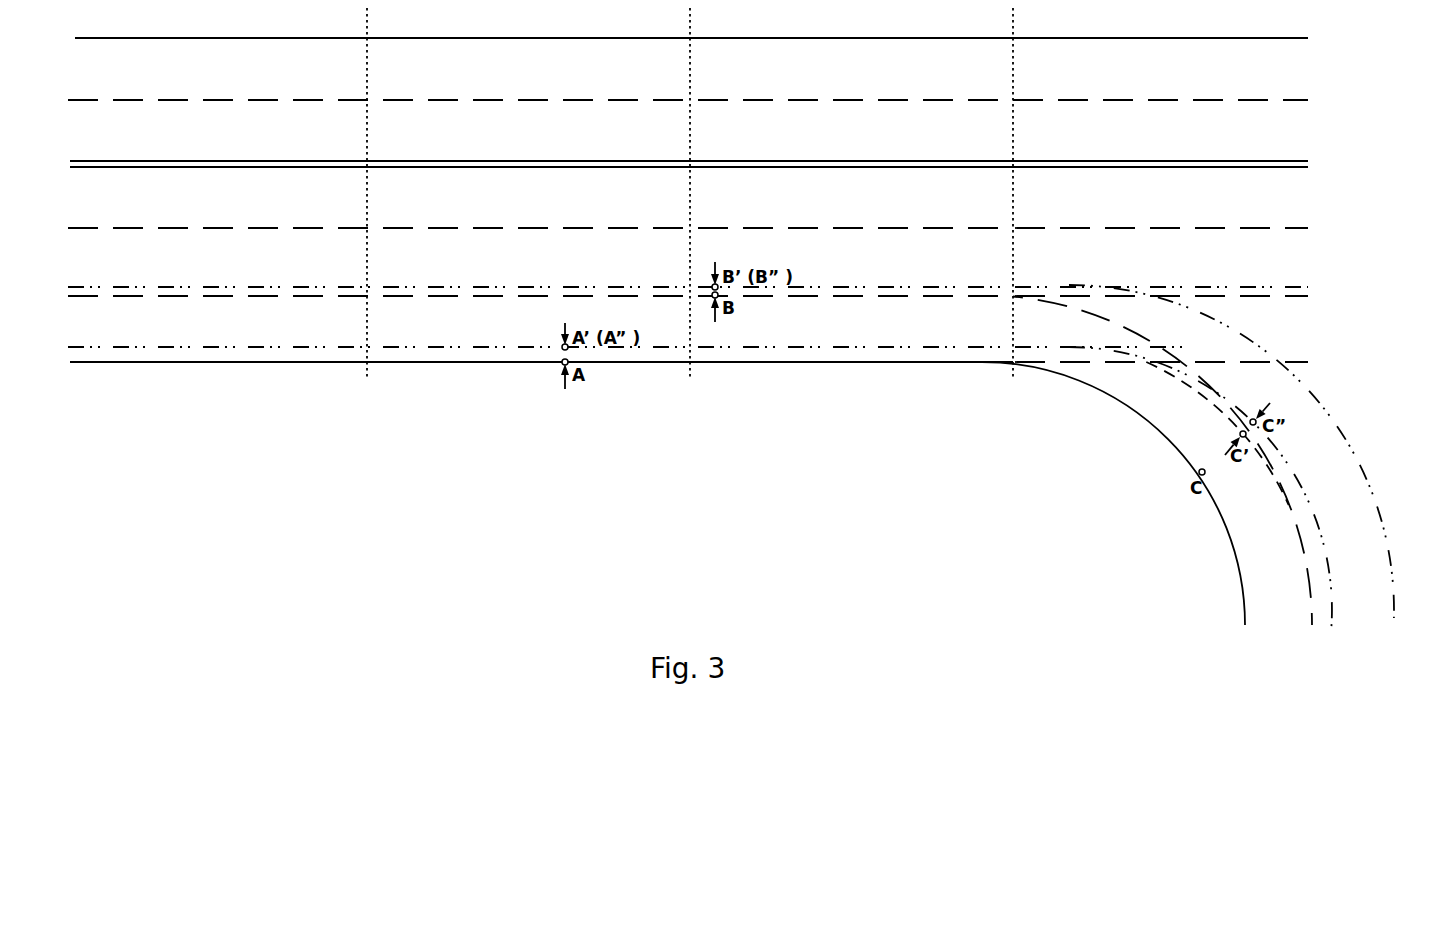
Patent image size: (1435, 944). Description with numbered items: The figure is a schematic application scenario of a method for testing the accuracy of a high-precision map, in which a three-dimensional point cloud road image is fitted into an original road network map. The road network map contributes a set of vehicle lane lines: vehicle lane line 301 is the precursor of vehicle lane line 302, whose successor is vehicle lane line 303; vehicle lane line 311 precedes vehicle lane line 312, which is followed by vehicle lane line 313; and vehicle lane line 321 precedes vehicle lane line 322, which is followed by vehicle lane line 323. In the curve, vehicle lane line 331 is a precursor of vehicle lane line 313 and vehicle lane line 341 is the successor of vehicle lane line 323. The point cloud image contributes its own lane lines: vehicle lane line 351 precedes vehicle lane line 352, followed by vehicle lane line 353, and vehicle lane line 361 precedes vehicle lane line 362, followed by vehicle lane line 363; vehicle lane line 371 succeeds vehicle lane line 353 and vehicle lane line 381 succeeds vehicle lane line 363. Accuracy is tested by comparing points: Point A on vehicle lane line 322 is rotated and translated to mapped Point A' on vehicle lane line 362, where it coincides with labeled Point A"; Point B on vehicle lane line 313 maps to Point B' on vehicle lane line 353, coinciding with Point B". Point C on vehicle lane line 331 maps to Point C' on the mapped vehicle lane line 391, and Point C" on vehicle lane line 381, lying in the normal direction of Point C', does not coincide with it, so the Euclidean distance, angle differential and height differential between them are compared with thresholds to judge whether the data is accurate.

The vehicle lane line 301 is at (137, 228).
The vehicle lane line 302 is at (400, 228).
The vehicle lane line 303 is at (903, 228).
The vehicle lane line 311 is at (137, 295).
The vehicle lane line 312 is at (400, 295).
The vehicle lane line 313 is at (902, 295).
The vehicle lane line 321 is at (137, 361).
The vehicle lane line 322 is at (400, 361).
The vehicle lane line 323 is at (902, 361).
The vehicle lane line 331 is at (1315, 518).
The vehicle lane line 341 is at (1120, 397).
The vehicle lane line 351 is at (233, 286).
The vehicle lane line 352 is at (510, 286).
The vehicle lane line 353 is at (820, 286).
The vehicle lane line 361 is at (233, 346).
The vehicle lane line 362 is at (510, 346).
The vehicle lane line 363 is at (820, 346).
The vehicle lane line 371 is at (1303, 387).
The vehicle lane line 381 is at (1313, 523).
The mapped vehicle lane line 391 is at (1197, 394).